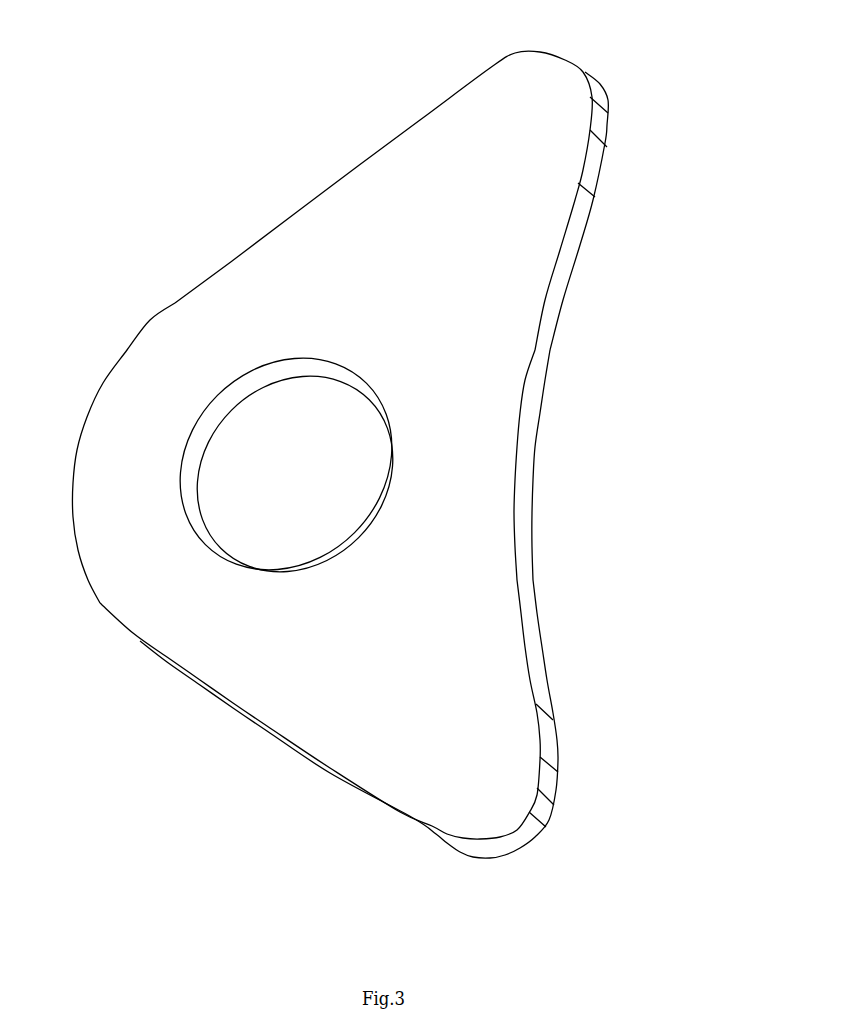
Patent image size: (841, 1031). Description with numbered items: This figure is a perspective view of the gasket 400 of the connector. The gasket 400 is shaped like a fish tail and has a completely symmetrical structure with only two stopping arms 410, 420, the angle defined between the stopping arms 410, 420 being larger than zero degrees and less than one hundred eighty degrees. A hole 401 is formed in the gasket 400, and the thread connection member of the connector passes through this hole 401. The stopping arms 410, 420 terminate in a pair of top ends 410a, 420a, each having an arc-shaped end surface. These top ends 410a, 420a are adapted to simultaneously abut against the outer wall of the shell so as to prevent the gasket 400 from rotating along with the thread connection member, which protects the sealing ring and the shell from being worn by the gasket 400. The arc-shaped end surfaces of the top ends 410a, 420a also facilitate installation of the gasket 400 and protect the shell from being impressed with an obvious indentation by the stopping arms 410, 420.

The gasket 400 is at (137, 585).
The hole 401 is at (267, 450).
The stopping arm 410 is at (475, 205).
The top end of stopping arm 410a is at (590, 78).
The stopping arm 420 is at (403, 720).
The top end of stopping arm 420a is at (520, 837).